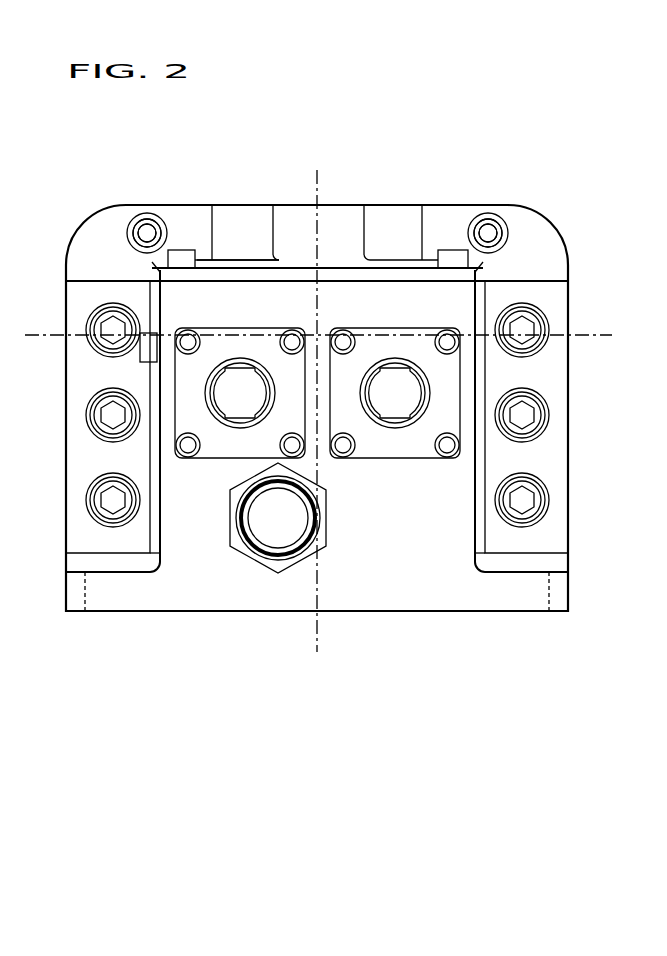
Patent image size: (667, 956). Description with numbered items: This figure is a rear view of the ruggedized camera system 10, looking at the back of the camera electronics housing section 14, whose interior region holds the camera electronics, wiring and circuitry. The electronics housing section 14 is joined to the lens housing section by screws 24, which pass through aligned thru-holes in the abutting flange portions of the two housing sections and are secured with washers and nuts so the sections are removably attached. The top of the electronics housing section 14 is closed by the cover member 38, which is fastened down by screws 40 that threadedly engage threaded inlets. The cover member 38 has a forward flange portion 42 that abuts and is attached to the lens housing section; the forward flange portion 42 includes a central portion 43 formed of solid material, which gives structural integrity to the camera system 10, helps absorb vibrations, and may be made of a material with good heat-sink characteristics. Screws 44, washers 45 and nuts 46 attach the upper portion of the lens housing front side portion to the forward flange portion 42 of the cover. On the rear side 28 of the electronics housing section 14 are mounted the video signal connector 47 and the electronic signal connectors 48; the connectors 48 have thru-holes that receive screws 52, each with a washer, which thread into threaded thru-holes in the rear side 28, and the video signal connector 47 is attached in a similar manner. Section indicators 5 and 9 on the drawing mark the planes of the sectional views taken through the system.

The ruggedized camera system 10 is at (448, 36).
The camera electronics housing section 14 is at (375, 593).
The screws 24 is at (88, 318).
The rear side 28 is at (442, 590).
The cover member 38 is at (390, 222).
The screws 40 is at (182, 250).
The forward flange portion 42 is at (556, 240).
The central portion 43 is at (333, 213).
The screws 44 is at (147, 231).
The washers 45 is at (127, 232).
The nuts 46 is at (136, 222).
The video signal connector 47 is at (243, 550).
The electronic signal connectors 48 is at (233, 460).
The screws 52 is at (195, 331).
The section line 5 is at (25, 335).
The section line 9 is at (317, 170).